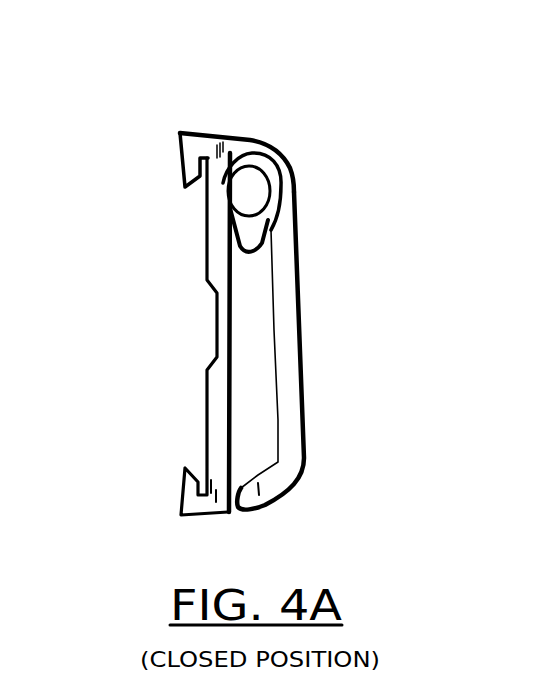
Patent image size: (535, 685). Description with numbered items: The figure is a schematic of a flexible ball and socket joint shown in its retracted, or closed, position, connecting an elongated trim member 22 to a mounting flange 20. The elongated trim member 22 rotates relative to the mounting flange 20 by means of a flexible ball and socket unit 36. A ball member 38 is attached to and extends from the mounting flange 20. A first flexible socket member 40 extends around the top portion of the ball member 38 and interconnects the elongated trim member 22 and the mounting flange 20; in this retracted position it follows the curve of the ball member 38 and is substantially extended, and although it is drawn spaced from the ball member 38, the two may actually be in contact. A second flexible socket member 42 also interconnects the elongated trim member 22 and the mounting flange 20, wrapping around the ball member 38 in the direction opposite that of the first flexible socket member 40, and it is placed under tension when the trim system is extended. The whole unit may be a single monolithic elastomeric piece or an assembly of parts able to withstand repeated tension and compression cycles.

The mounting flange 20 is at (207, 388).
The elongated trim member 22 is at (303, 367).
The flexible ball and socket unit 36 is at (273, 147).
The ball member 38 is at (262, 199).
The first flexible socket member 40 is at (240, 135).
The second flexible socket member 42 is at (250, 252).